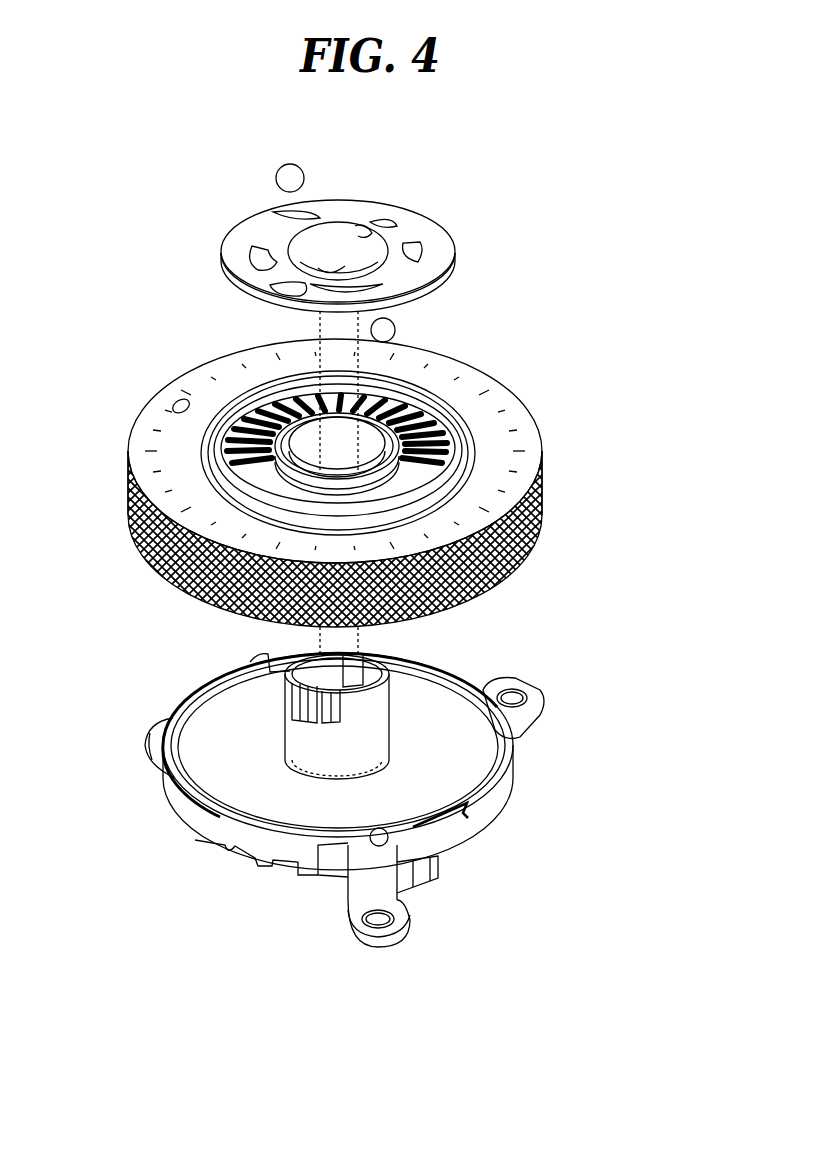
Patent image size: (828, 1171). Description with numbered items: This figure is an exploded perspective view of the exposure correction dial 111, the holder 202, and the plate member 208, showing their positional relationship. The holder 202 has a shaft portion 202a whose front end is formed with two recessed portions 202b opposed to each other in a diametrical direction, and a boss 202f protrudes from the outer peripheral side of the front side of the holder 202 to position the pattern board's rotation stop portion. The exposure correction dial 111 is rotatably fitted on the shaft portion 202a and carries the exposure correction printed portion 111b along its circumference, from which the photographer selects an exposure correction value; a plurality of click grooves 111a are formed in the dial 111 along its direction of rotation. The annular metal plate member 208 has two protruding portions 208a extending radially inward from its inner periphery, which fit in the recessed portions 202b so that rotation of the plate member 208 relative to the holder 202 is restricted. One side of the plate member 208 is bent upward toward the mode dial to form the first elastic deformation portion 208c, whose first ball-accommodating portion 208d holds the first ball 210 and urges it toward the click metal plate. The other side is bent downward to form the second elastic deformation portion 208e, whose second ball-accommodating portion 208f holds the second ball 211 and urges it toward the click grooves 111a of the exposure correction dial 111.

The exposure correction dial 111 is at (548, 520).
The click grooves 111a is at (385, 420).
The exposure correction printed portion 111b is at (178, 402).
The holder 202 is at (195, 768).
The shaft portion 202a is at (385, 733).
The recessed portions 202b is at (320, 712).
The boss 202f is at (389, 840).
The plate member 208 is at (430, 276).
The protruding portions 208a is at (318, 268).
The first elastic deformation portion 208c is at (242, 268).
The first ball-accommodating portion 208d is at (276, 286).
The second elastic deformation portion 208e is at (332, 203).
The second ball-accommodating portion 208f is at (386, 216).
The first ball 210 is at (278, 172).
The second ball 211 is at (396, 330).